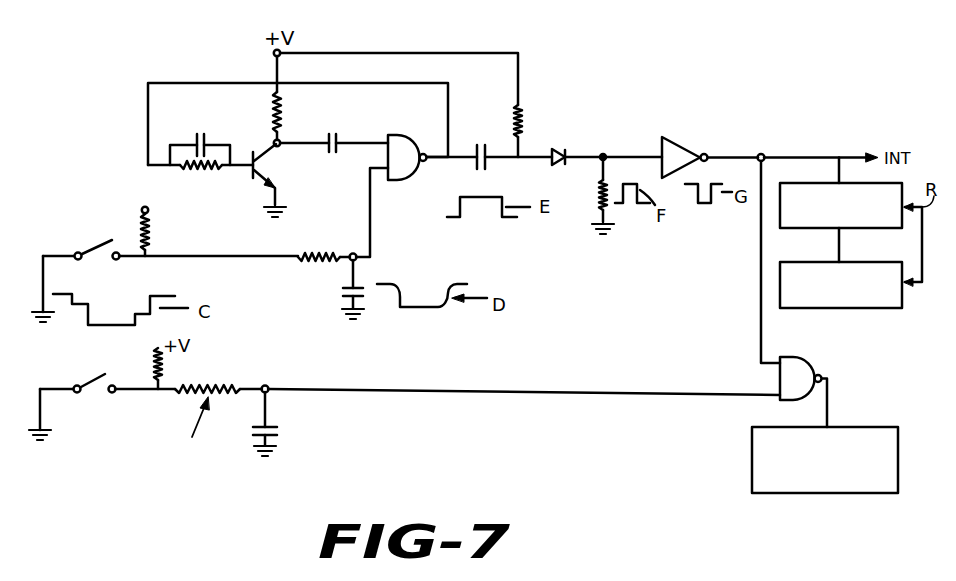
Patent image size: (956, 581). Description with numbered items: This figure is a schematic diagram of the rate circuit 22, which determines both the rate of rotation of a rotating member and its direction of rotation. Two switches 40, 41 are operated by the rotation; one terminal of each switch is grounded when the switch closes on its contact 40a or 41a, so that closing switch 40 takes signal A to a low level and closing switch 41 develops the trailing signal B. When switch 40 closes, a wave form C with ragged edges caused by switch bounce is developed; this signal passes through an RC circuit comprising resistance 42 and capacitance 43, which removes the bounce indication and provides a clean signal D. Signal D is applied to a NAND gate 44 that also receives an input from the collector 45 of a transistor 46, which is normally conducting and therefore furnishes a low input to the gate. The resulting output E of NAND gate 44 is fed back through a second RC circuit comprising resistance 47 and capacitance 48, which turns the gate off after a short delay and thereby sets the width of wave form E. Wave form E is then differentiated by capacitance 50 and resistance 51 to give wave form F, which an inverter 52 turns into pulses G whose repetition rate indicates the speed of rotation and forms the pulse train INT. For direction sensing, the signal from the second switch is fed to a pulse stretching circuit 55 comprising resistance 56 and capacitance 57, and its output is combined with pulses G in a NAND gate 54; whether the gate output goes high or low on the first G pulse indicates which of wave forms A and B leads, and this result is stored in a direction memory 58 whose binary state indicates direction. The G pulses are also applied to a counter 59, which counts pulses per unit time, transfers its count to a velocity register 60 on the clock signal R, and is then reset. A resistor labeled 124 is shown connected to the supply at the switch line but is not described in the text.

The rate circuit 22 is at (522, 124).
The switch 40 is at (98, 246).
The contact 40a is at (116, 261).
The switch 41 is at (97, 372).
The contact 41a is at (112, 394).
The resistance 42 is at (321, 253).
The capacitance 43 is at (346, 302).
The NAND gate 44 is at (408, 135).
The collector 45 is at (282, 140).
The transistor 46 is at (262, 169).
The resistance 47 is at (190, 168).
The capacitance 48 is at (206, 142).
The capacitance 50 is at (484, 150).
The resistance 51 is at (600, 210).
The inverter 52 is at (684, 146).
The NAND gate 54 is at (782, 368).
The pulse stretching circuit 55 is at (189, 431).
The resistance 56 is at (207, 386).
The capacitance 57 is at (280, 437).
The direction memory 58 is at (752, 457).
The counter 59 is at (803, 183).
The velocity register 60 is at (880, 308).
The resistor 124 is at (150, 238).